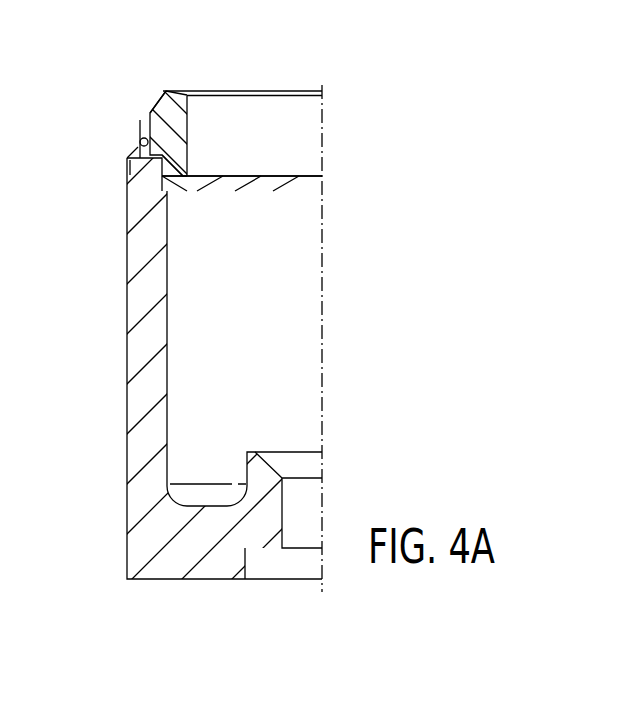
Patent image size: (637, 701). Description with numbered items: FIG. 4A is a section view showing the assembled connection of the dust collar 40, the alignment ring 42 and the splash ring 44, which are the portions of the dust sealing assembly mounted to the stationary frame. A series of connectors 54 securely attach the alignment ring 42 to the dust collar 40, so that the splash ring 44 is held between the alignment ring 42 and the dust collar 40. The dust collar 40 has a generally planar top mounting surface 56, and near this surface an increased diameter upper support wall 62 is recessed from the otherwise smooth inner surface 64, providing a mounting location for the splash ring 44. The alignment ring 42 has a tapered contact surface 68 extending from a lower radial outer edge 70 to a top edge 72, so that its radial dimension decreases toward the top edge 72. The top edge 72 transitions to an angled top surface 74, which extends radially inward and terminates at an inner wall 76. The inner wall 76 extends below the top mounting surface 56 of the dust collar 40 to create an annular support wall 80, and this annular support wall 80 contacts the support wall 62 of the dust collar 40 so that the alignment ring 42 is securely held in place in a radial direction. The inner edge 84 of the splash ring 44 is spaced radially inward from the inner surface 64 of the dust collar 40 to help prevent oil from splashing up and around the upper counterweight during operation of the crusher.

The dust collar 40 is at (126, 455).
The alignment ring 42 is at (332, 137).
The splash ring 44 is at (241, 192).
The connectors 54 is at (148, 137).
The top mounting surface 56 is at (130, 163).
The support wall 62 is at (160, 162).
The inner surface 64 is at (168, 412).
The tapered contact surface 68 is at (158, 103).
The radial outer edge 70 is at (133, 157).
The top edge 72 is at (165, 91).
The top surface 74 is at (186, 91).
The inner wall 76 is at (195, 122).
The annular support wall 80 is at (183, 178).
The inner edge 84 is at (276, 177).